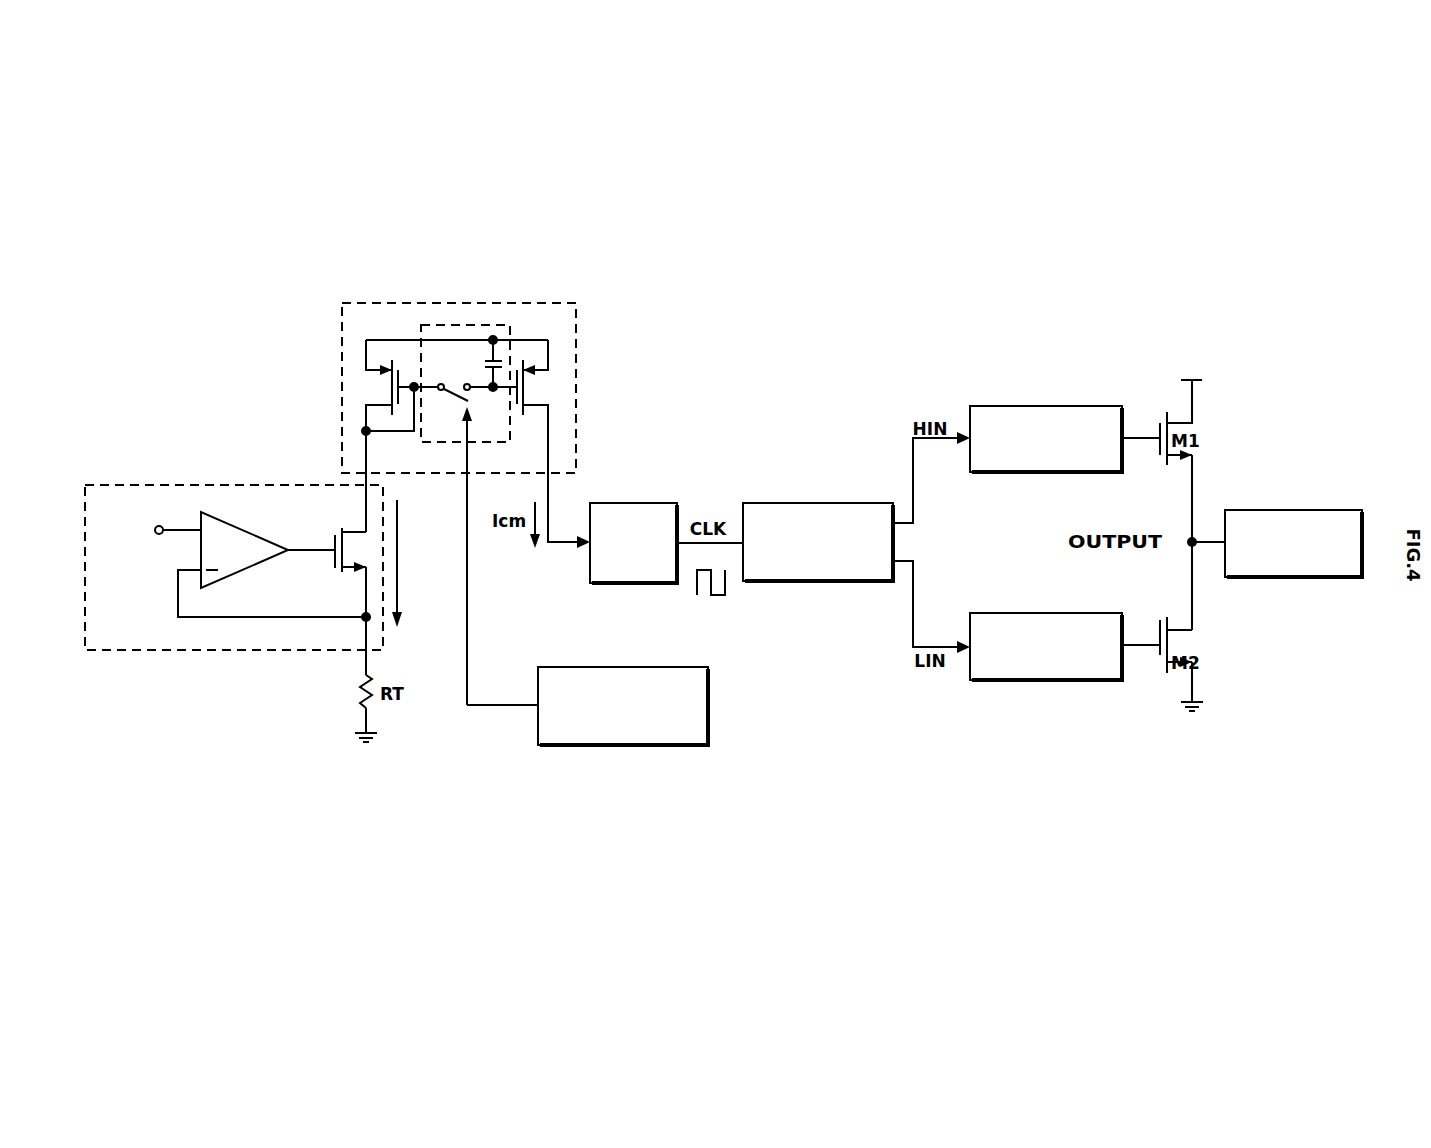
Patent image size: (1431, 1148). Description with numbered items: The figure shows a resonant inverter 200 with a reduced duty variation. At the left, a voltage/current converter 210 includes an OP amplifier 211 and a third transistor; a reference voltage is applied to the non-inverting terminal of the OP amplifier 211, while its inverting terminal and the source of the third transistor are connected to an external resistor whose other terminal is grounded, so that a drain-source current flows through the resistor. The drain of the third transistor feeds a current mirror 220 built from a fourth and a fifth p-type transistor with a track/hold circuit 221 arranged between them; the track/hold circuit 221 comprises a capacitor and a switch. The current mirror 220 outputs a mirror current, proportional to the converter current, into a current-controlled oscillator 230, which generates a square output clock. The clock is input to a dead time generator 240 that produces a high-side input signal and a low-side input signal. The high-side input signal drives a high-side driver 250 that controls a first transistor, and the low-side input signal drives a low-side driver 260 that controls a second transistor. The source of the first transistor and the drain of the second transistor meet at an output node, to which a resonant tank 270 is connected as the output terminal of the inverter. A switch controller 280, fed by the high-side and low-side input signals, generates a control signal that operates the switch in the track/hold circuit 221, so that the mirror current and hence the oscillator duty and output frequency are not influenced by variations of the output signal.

The resonant inverter 200 is at (947, 292).
The voltage/current converter 210 is at (165, 485).
The OP amplifier 211 is at (253, 531).
The current mirror 220 is at (342, 383).
The track/hold circuit 221 is at (420, 340).
The current-controlled oscillator (CCO) 230 is at (624, 503).
The dead time generator 240 is at (820, 503).
The high-side driver 250 is at (1048, 406).
The low-side driver 260 is at (1018, 613).
The resonant tank 270 is at (1295, 510).
The switch controller 280 is at (624, 667).